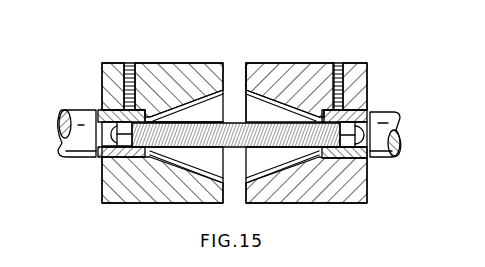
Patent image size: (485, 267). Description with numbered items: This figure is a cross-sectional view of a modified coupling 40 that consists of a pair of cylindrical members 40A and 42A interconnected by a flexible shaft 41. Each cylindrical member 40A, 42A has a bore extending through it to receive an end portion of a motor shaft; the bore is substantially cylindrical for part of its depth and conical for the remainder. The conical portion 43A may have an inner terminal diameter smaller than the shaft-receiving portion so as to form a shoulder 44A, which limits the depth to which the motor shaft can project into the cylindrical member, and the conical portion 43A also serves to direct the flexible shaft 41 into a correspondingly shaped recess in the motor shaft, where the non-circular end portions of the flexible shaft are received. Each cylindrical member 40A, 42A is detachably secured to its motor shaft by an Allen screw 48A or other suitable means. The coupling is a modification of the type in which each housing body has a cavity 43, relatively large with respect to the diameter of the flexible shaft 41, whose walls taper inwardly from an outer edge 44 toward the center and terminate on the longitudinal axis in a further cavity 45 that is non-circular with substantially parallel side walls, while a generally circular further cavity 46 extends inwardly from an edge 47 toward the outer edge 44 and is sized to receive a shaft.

The coupling sleeve half 40 is at (248, 54).
The cylindrical member 40A is at (288, 63).
The flexible shaft 41 is at (271, 148).
The cylindrical member 42A is at (113, 66).
The cavity 43 is at (218, 89).
The conical portion 43A is at (188, 188).
The outer edge 44 is at (228, 71).
The shoulder 44A is at (156, 153).
The further cavity 45 is at (176, 117).
The further cavity 46 is at (372, 113).
The edge 47 is at (88, 110).
The Allen screw 48A is at (123, 92).